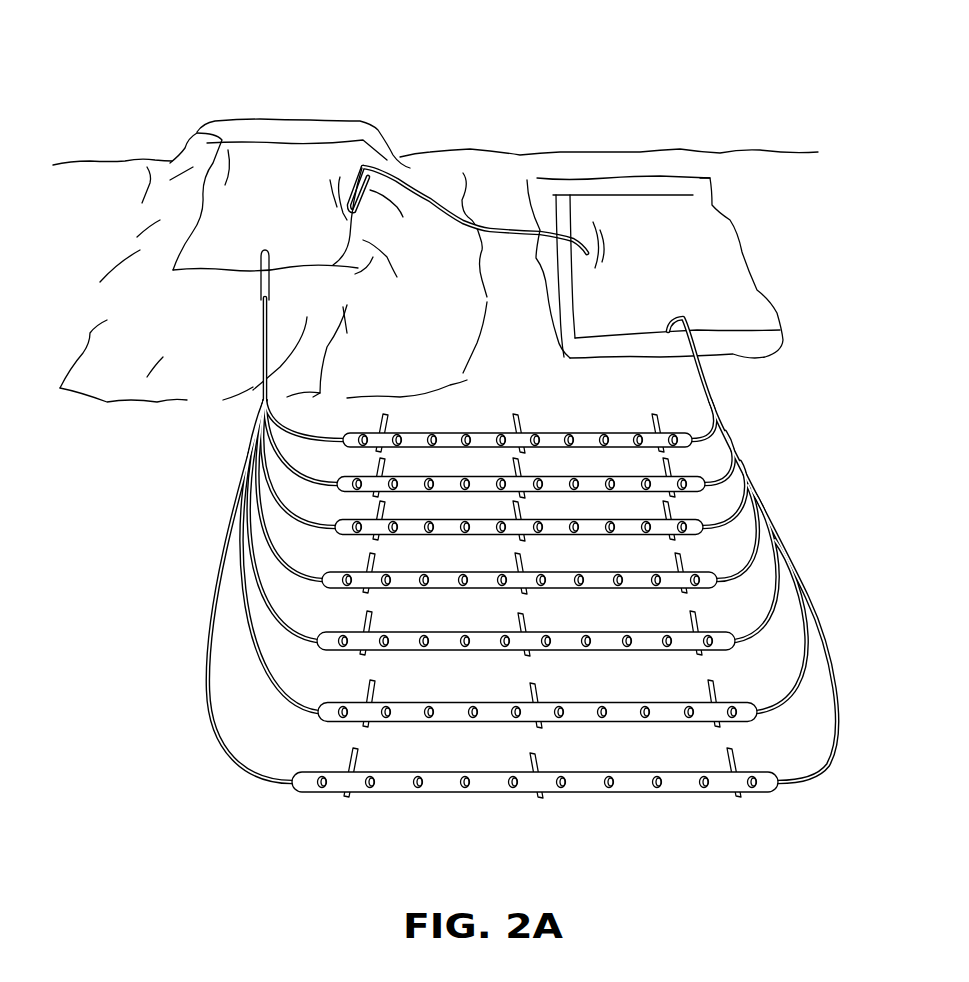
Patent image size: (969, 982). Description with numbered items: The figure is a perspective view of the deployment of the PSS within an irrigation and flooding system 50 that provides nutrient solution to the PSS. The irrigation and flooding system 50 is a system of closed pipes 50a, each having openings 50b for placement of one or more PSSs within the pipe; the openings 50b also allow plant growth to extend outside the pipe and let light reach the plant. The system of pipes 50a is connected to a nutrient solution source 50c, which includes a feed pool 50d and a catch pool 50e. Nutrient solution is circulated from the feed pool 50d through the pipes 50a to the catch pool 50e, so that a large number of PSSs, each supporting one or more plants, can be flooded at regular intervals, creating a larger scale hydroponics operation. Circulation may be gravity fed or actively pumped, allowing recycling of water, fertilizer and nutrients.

The irrigation and flooding system 50 is at (150, 624).
The closed pipes 50a is at (668, 710).
The openings 50b is at (606, 784).
The nutrient solution source 50c is at (441, 112).
The feed pool 50d is at (240, 213).
The catch pool 50e is at (688, 273).